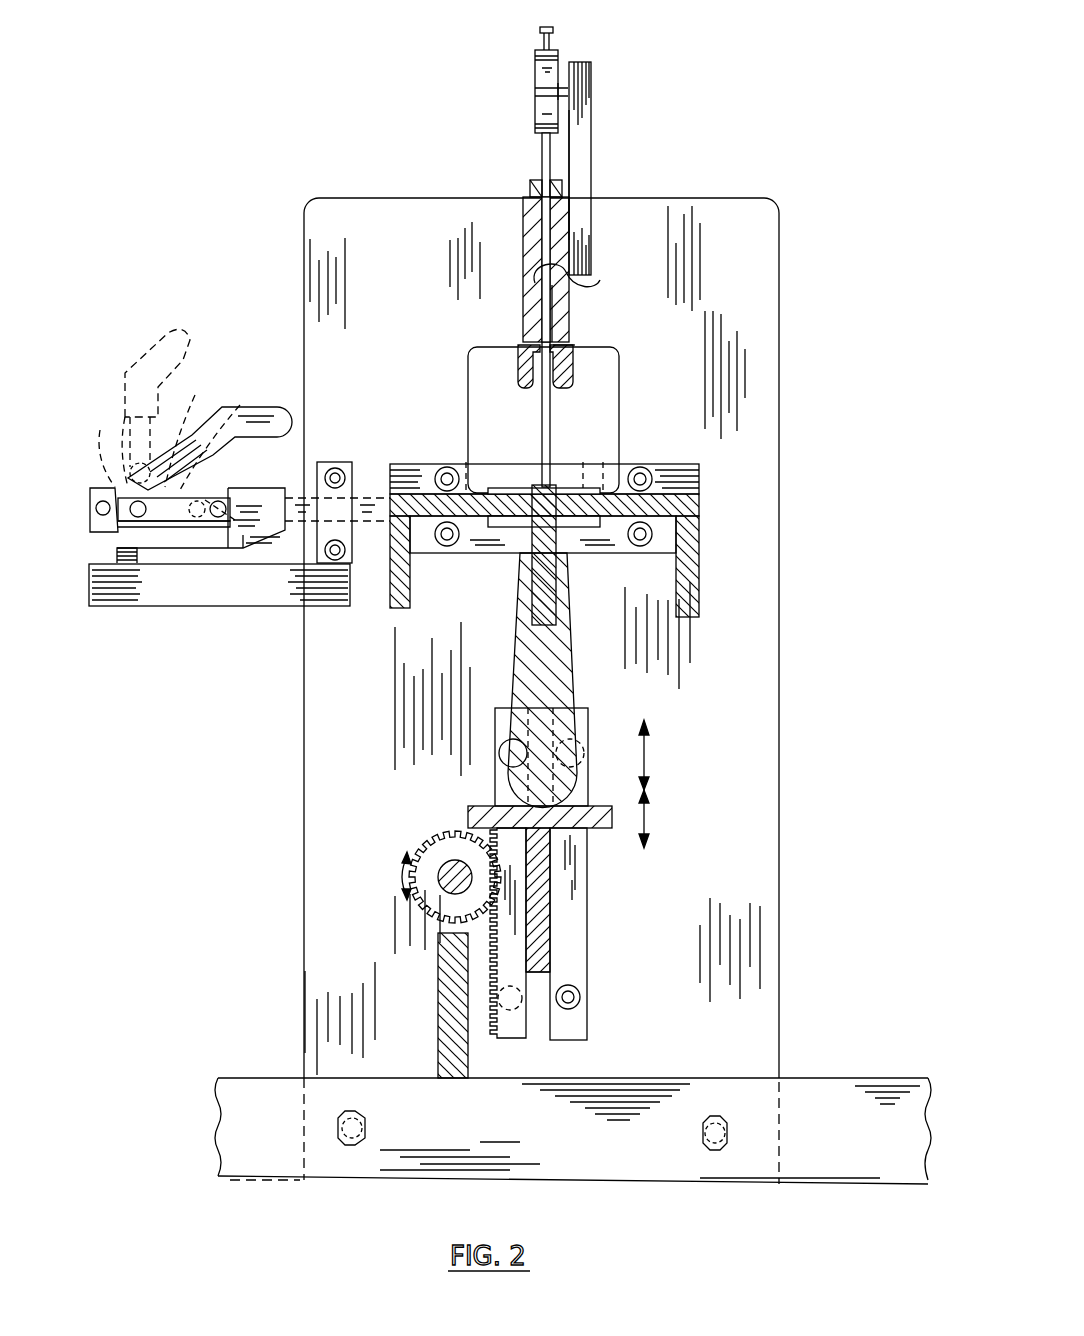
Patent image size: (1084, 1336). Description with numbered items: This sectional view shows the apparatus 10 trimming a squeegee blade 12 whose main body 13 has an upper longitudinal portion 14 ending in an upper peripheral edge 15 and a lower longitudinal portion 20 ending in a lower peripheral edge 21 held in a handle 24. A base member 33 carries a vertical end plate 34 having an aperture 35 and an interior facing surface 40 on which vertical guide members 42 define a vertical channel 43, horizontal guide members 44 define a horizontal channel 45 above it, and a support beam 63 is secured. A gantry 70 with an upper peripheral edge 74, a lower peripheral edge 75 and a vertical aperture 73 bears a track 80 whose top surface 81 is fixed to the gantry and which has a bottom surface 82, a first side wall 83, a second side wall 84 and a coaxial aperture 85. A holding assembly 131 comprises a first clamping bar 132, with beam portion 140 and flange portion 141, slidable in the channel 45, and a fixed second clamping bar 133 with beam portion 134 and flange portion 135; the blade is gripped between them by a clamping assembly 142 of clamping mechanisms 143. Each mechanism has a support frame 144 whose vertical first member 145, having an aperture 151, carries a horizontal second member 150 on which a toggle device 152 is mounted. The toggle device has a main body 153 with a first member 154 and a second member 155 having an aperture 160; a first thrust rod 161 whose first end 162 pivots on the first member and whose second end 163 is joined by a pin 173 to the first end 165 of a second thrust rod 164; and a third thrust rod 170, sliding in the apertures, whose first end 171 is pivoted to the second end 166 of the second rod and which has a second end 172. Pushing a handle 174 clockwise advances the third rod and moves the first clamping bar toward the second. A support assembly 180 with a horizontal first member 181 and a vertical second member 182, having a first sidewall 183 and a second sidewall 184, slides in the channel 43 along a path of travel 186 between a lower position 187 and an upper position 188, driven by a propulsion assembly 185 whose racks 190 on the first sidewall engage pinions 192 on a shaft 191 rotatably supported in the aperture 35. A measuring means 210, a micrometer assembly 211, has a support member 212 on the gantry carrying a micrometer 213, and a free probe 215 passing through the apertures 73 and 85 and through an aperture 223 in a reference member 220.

The apparatus 10 is at (700, 188).
The squeegee blade 12 is at (544, 559).
The main body 13 is at (556, 590).
The upper longitudinal portion 14 is at (557, 493).
The upper longitudinally disposed peripheral edge 15 is at (535, 490).
The lower longitudinal portion 20 is at (537, 572).
The lower longitudinally disposed peripheral edge 21 is at (518, 655).
The handle 24 is at (553, 671).
The base member 33 is at (798, 1115).
The end plate 34 is at (755, 805).
The aperture 35 is at (427, 913).
The interior facing surface 40 is at (750, 734).
The vertically disposed bars or guide members 42 is at (522, 1005).
The vertically oriented channel 43 is at (537, 1027).
The horizontally disposed bars or guide members 44 is at (660, 528).
The horizontally oriented channel 45 is at (652, 487).
The support beam 63 is at (515, 972).
The gantry 70 is at (558, 296).
The vertically disposed aperture 73 is at (578, 282).
The upper peripheral edge 74 is at (523, 199).
The lower peripheral edge 75 is at (523, 368).
The track 80 is at (563, 384).
The top surface 81 is at (562, 341).
The bottom surface 82 is at (565, 385).
The first side wall 83 is at (520, 377).
The second side wall 84 is at (568, 370).
The vertically disposed aperture 85 is at (560, 356).
The holding or positioning assembly 131 is at (653, 462).
The first clamping bar 132 is at (423, 480).
The second clamping bar 133 is at (665, 532).
The beam portion 134 is at (688, 500).
The flange portion 135 is at (688, 588).
The beam portion 140 is at (422, 500).
The flange portion 141 is at (393, 597).
The clamping assembly 142 is at (200, 609).
The clamping mechanism 143 is at (274, 611).
The support frame 144 is at (170, 580).
The first member 145 is at (350, 485).
The second member 150 is at (217, 585).
The aperture 151 is at (304, 567).
The toggle device 152 is at (115, 467).
The main body 153 is at (175, 538).
The first member 154 is at (105, 525).
The second member 155 is at (293, 500).
The aperture 160 is at (257, 493).
The first link or thrust rod 161 is at (120, 485).
The first end 162 is at (122, 535).
The second end 163 is at (117, 445).
The second link or thrust rod 164 is at (218, 410).
The first end 165 is at (177, 410).
The second end 166 is at (257, 480).
The third link or thrust rod 170 is at (323, 467).
The first end 171 is at (265, 508).
The second end 172 is at (355, 575).
The pin 173 is at (123, 397).
The handle 174 is at (185, 335).
The support assembly 180 is at (556, 896).
The first member 181 is at (598, 818).
The second member 182 is at (543, 923).
The first surface or sidewall 183 is at (528, 920).
The second surface or sidewall 184 is at (553, 860).
The propulsion or driving assembly 185 is at (425, 923).
The path of travel 186 is at (646, 790).
The first, lower position 187 is at (646, 847).
The second, upper position 188 is at (646, 722).
The racks 190 is at (523, 999).
The shaft 191 is at (445, 871).
The pinions 192 is at (448, 850).
The measuring means 210 is at (596, 100).
The micrometer assembly 211 is at (596, 130).
The support member 212 is at (590, 67).
The micrometer 213 is at (553, 49).
The free probe 215 is at (543, 146).
The reference member 220 is at (562, 183).
The aperture 223 is at (527, 193).